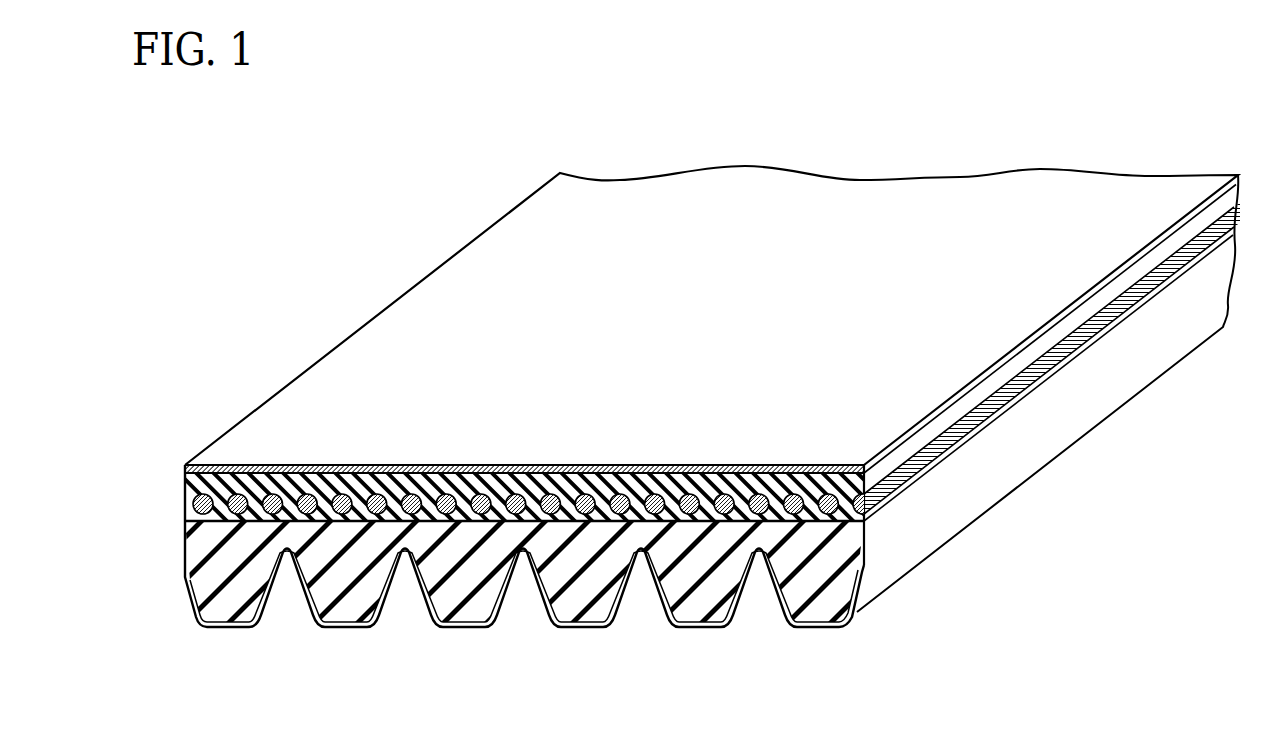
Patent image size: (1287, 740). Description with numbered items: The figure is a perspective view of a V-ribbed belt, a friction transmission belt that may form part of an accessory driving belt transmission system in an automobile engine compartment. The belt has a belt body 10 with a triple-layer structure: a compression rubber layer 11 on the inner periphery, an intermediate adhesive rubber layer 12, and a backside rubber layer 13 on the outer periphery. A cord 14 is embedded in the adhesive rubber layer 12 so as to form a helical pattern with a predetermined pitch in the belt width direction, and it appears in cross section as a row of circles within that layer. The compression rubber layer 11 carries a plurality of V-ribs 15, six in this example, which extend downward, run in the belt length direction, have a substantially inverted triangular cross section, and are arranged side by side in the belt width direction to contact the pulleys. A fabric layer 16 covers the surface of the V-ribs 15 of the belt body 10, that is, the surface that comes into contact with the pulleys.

The belt body 10 is at (1106, 455).
The compression rubber layer 11 is at (852, 553).
The adhesive rubber layer 12 is at (878, 486).
The backside rubber layer 13 is at (872, 463).
The cord 14 is at (689, 502).
The V-ribs 15 is at (223, 611).
The fabric layer 16 is at (853, 618).